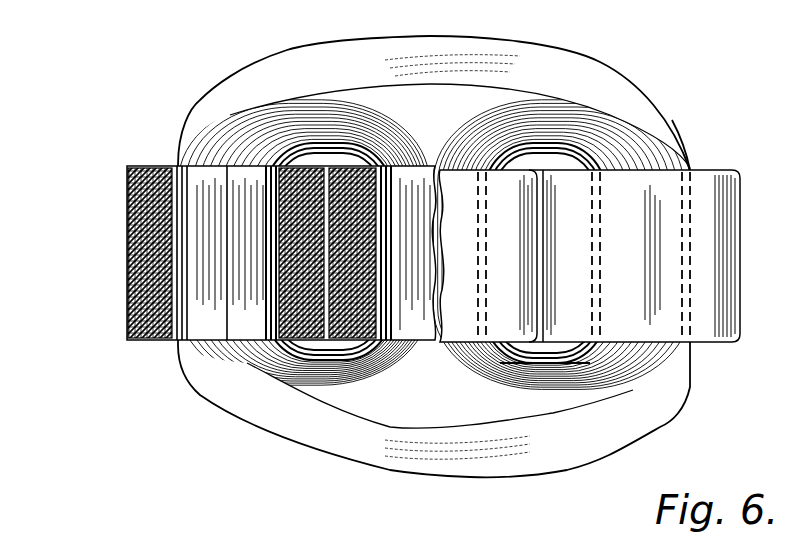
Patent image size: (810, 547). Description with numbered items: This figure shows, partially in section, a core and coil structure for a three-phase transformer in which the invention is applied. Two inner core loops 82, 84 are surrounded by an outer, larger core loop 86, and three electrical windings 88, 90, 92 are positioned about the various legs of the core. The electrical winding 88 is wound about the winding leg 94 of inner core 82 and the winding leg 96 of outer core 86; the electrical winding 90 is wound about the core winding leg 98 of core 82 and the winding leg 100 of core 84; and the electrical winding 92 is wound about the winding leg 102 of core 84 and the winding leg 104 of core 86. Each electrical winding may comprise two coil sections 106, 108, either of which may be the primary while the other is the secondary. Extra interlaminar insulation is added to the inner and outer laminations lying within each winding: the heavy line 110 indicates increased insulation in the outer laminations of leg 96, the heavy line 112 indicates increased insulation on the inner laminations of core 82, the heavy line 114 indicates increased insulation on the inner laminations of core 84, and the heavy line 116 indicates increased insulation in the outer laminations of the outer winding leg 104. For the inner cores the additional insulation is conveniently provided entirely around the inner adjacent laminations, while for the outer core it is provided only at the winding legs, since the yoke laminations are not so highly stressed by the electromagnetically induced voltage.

The inner core loop 82 is at (277, 127).
The inner core loop 84 is at (570, 117).
The outer core loop 86 is at (630, 90).
The electrical winding 88 is at (192, 163).
The electrical winding 90 is at (393, 370).
The electrical winding 92 is at (715, 312).
The winding leg 94 is at (250, 343).
The winding leg 96 is at (197, 330).
The core winding leg 98 is at (405, 335).
The winding leg 100 is at (470, 158).
The winding leg 102 is at (632, 392).
The winding leg 104 is at (677, 347).
The coil section 106 is at (135, 304).
The coil section 108 is at (163, 330).
The heavy line indicating increased interlaminar insulation 110 is at (207, 360).
The heavy line indicating increased interlaminar insulation 112 is at (378, 148).
The heavy line indicating increased interlaminar insulation 114 is at (490, 362).
The heavy line indicating increased interlaminar insulation 116 is at (688, 146).